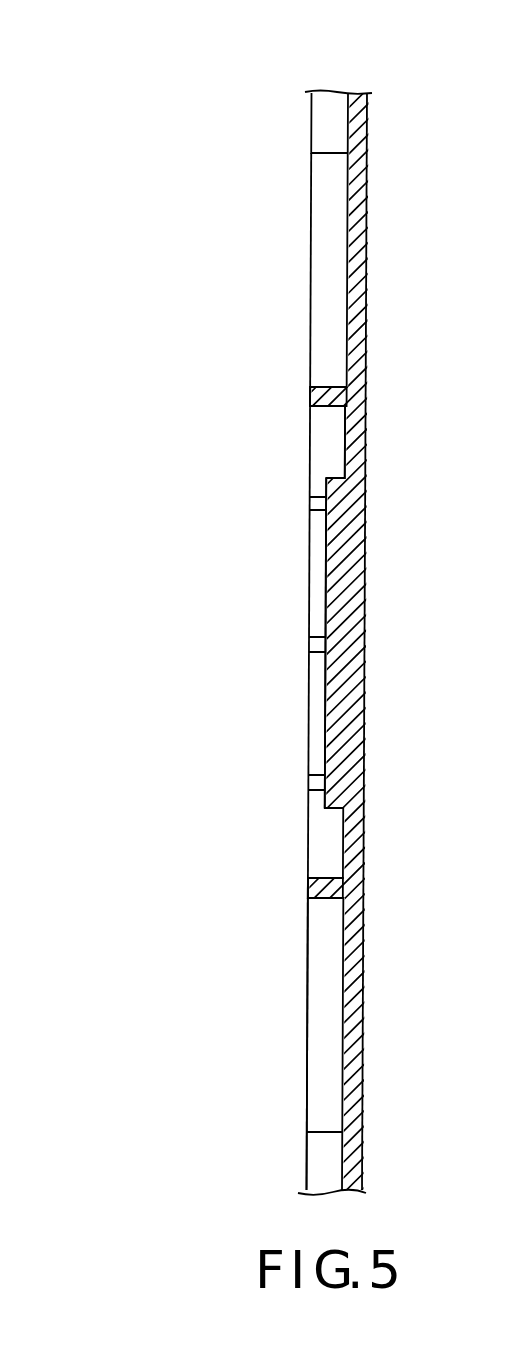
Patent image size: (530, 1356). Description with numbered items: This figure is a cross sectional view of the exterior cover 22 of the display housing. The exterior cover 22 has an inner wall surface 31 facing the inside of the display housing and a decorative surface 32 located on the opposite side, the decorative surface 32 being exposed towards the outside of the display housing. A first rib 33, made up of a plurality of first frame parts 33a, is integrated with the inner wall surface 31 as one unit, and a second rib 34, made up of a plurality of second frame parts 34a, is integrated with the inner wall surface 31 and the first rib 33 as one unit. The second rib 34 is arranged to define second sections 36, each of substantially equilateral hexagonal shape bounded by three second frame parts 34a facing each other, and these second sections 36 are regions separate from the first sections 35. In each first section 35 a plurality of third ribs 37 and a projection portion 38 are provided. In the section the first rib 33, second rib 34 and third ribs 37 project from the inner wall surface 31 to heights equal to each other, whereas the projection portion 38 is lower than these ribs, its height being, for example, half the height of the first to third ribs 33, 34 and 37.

The exterior cover 22 is at (108, 97).
The inner wall surface 31 is at (349, 108).
The decorative surface 32 is at (368, 118).
The first rib 33 is at (292, 602).
The first frame part 33a is at (313, 395).
The second rib 34 is at (310, 1025).
The second frame part 34a is at (320, 121).
The first section 35 is at (346, 450).
The second section 36 is at (348, 212).
The third rib 37 is at (289, 635).
The projection portion 38 is at (326, 710).